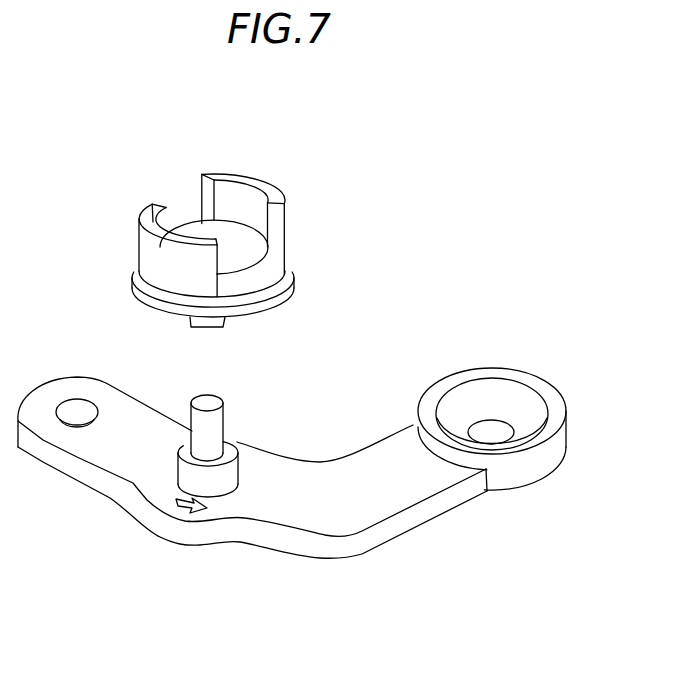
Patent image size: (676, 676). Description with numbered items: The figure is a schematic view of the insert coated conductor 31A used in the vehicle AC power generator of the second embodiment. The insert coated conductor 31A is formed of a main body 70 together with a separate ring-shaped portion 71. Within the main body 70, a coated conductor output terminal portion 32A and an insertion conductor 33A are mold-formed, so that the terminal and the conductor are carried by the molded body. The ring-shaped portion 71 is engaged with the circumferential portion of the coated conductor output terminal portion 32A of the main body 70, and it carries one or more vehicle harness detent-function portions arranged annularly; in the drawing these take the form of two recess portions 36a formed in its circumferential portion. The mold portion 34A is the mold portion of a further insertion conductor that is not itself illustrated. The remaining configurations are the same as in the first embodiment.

The insert coated conductor 31A is at (520, 148).
The main body 70 is at (421, 336).
The ring-shaped portion 71 is at (268, 184).
The bushing bore 36a is at (192, 227).
The coated conductor output terminal portion 32A is at (208, 403).
The insertion conductor 33A is at (462, 428).
The mold portion 34A is at (407, 537).